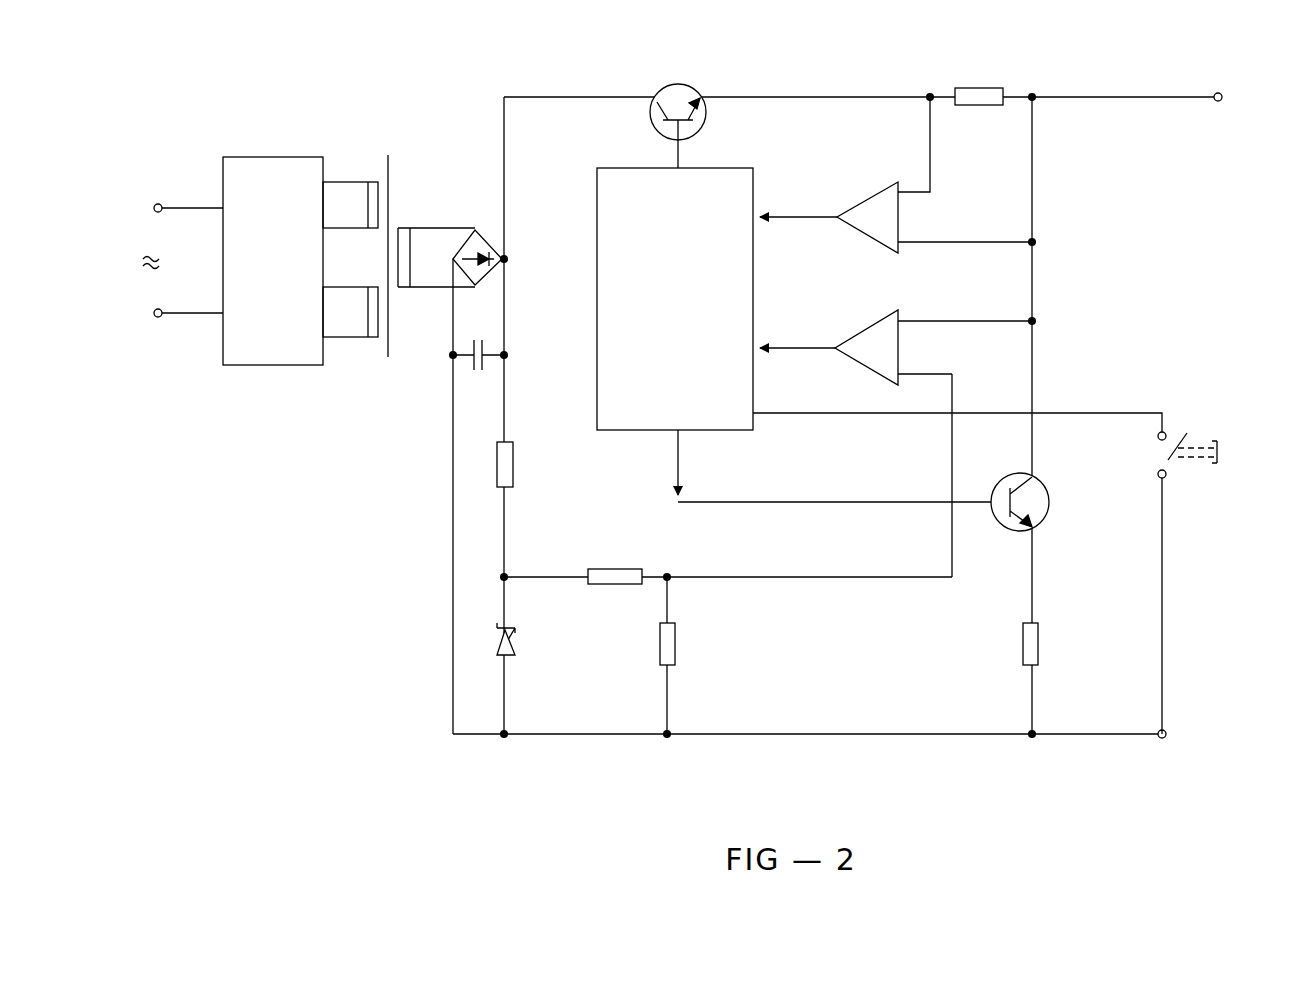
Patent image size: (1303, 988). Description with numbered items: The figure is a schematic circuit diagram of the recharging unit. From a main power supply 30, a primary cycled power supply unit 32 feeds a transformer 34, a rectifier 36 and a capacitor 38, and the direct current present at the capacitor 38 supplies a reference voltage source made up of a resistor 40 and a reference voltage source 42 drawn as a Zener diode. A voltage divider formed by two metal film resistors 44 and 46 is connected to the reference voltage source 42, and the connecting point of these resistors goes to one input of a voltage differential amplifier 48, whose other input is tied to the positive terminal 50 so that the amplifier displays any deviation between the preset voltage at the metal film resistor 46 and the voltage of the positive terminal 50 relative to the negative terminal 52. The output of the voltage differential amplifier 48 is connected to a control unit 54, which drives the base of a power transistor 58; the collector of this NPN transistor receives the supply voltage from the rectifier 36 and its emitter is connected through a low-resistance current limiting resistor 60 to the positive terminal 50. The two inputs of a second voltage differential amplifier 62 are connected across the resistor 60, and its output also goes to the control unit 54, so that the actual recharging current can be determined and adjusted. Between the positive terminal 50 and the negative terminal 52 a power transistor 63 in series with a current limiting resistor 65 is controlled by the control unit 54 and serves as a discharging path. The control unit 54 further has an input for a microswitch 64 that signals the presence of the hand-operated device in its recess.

The main power supply 30 is at (159, 260).
The primary cycled power supply unit 32 is at (256, 274).
The transformer 34 is at (387, 180).
The rectifier 36 is at (478, 245).
The capacitor 38 is at (470, 368).
The resistor 40 is at (497, 472).
The reference voltage source 42 is at (513, 655).
The metal film resistor 44 is at (618, 584).
The metal film resistor 46 is at (675, 657).
The voltage differential amplifier 48 is at (898, 352).
The positive terminal 50 is at (1222, 94).
The negative terminal 52 is at (1166, 731).
The control unit 54 is at (658, 304).
The power transistor 58 is at (693, 85).
The current limiting resistor 60 is at (980, 88).
The voltage differential amplifier 62 is at (898, 218).
The power transistor 63 is at (1047, 510).
The microswitch 64 is at (1220, 443).
The current limiting resistor 65 is at (1038, 642).